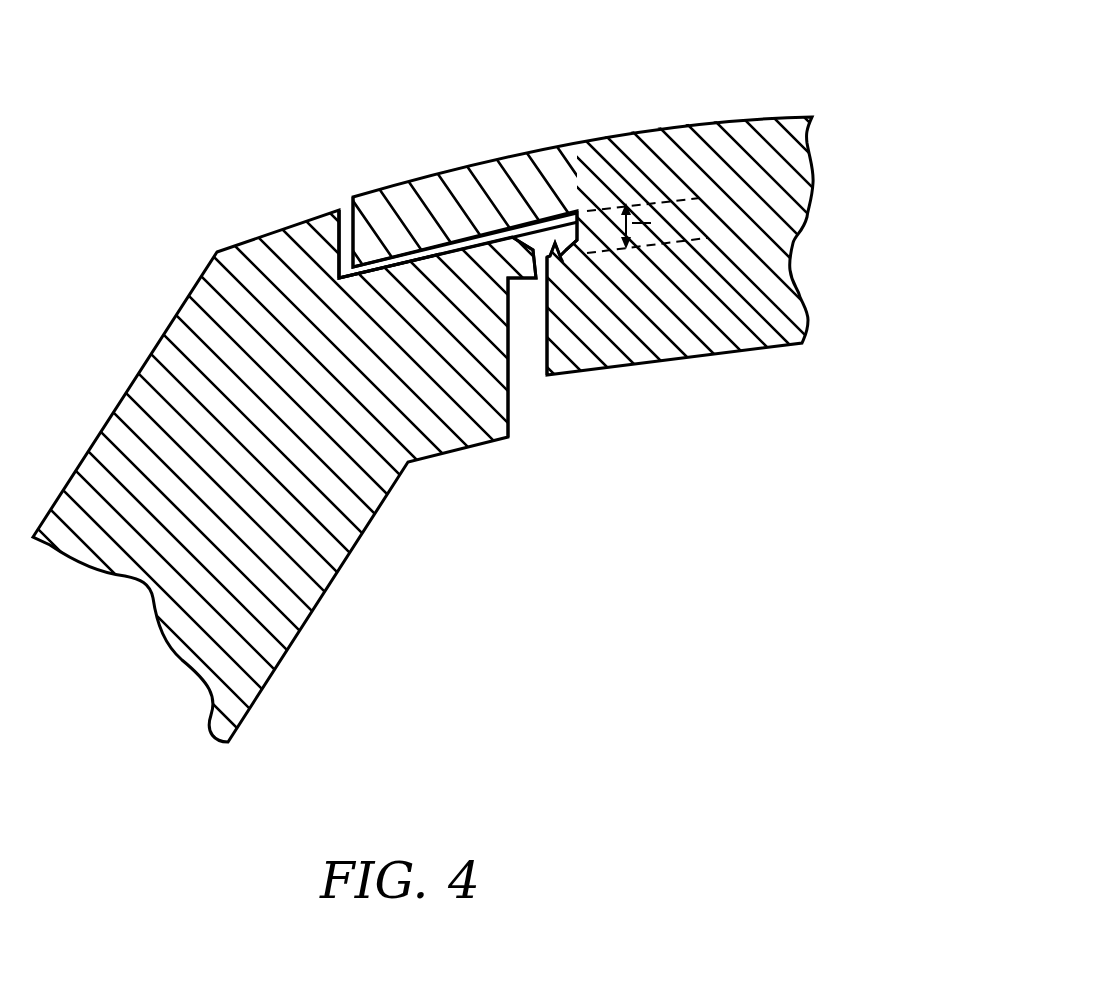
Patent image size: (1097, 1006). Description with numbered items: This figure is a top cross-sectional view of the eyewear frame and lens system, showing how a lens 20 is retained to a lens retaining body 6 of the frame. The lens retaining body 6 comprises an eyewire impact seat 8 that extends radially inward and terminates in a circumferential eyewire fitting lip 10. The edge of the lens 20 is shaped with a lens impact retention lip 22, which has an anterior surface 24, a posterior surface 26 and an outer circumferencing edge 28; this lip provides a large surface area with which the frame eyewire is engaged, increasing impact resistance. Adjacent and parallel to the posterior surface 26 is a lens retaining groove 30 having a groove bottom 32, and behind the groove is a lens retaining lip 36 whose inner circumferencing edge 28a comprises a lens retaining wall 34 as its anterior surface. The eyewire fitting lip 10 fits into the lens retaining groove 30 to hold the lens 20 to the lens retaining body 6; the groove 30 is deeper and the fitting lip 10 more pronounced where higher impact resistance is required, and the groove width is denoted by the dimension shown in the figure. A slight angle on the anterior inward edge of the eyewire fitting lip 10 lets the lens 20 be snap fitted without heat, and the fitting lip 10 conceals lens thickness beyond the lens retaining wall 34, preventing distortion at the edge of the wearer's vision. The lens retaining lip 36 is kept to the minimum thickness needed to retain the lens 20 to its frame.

The lens retaining body 6 is at (238, 623).
The eyewire impact seat 8 is at (386, 279).
The eyewire fitting lip 10 is at (525, 259).
The lens 20 is at (773, 137).
The lens impact retention lip 22 is at (443, 190).
The anterior surface 24 is at (362, 196).
The posterior surface 26 is at (572, 222).
The outer circumferencing edge 28 is at (339, 212).
The inner circumferencing edge 28a is at (546, 325).
The lens retaining groove 30 is at (568, 245).
The groove bottom 32 is at (565, 225).
The lens retaining wall 34 is at (561, 247).
The lens retaining lip 36 is at (565, 268).